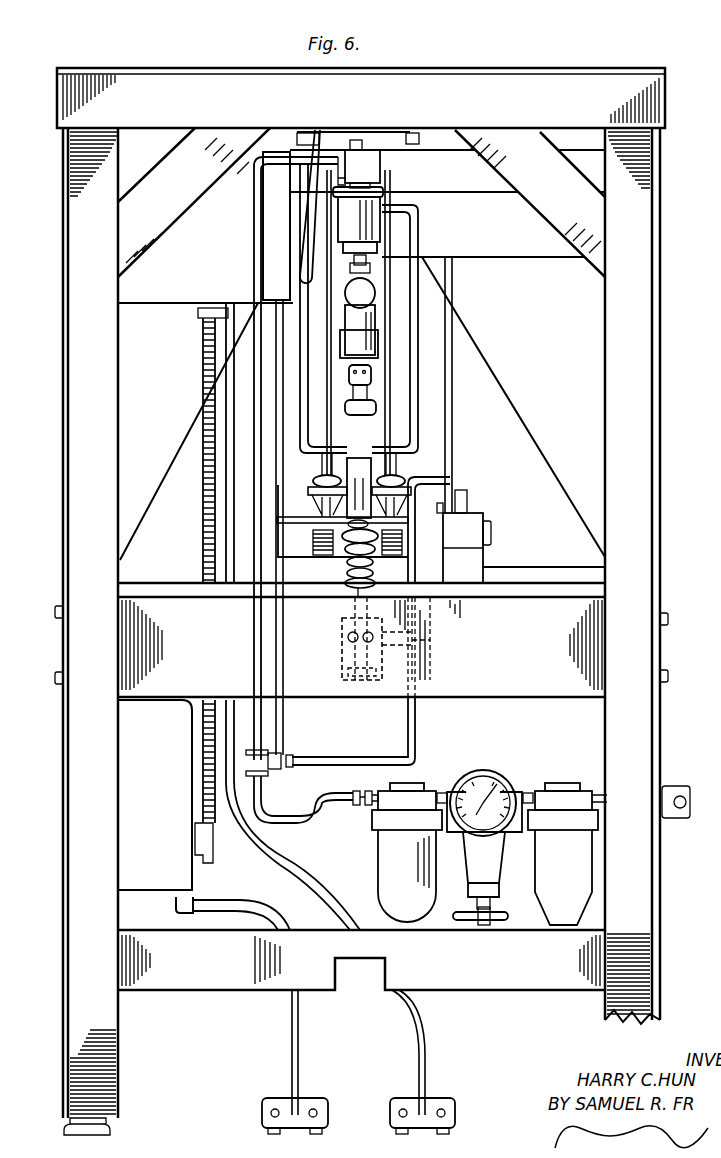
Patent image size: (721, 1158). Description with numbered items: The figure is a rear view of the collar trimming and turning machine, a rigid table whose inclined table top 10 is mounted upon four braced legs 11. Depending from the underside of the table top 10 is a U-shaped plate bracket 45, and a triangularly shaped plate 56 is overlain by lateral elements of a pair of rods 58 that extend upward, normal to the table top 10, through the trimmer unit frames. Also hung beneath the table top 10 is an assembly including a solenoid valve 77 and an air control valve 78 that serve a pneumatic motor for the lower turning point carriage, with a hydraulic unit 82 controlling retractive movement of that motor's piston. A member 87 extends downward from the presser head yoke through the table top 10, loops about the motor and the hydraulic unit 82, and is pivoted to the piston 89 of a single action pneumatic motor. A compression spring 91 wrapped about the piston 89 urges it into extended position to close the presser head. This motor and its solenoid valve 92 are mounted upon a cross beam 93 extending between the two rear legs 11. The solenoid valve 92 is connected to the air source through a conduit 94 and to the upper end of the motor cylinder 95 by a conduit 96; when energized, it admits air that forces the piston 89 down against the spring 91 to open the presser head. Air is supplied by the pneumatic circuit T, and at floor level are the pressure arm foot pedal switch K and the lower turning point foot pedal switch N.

The table top 10 is at (516, 71).
The legs 11 is at (63, 766).
The U-shaped plate bracket 45 is at (452, 441).
The triangularly shaped plate 56 is at (318, 484).
The rods 58 is at (325, 380).
The solenoid valve 77 is at (368, 318).
The air control valve 78 is at (381, 231).
The hydraulic unit 82 is at (372, 365).
The member 87 is at (413, 412).
The piston 89 is at (352, 598).
The compression spring 91 is at (348, 570).
The solenoid valve 92 is at (470, 518).
The cross beam 93 is at (482, 628).
The conduit 94 is at (417, 745).
The motor cylinder 95 is at (340, 650).
The conduit 96 is at (430, 600).
The pneumatic circuit T is at (243, 628).
The pressure arm foot pedal switch K is at (272, 1102).
The lower turning point foot pedal switch N is at (444, 1104).